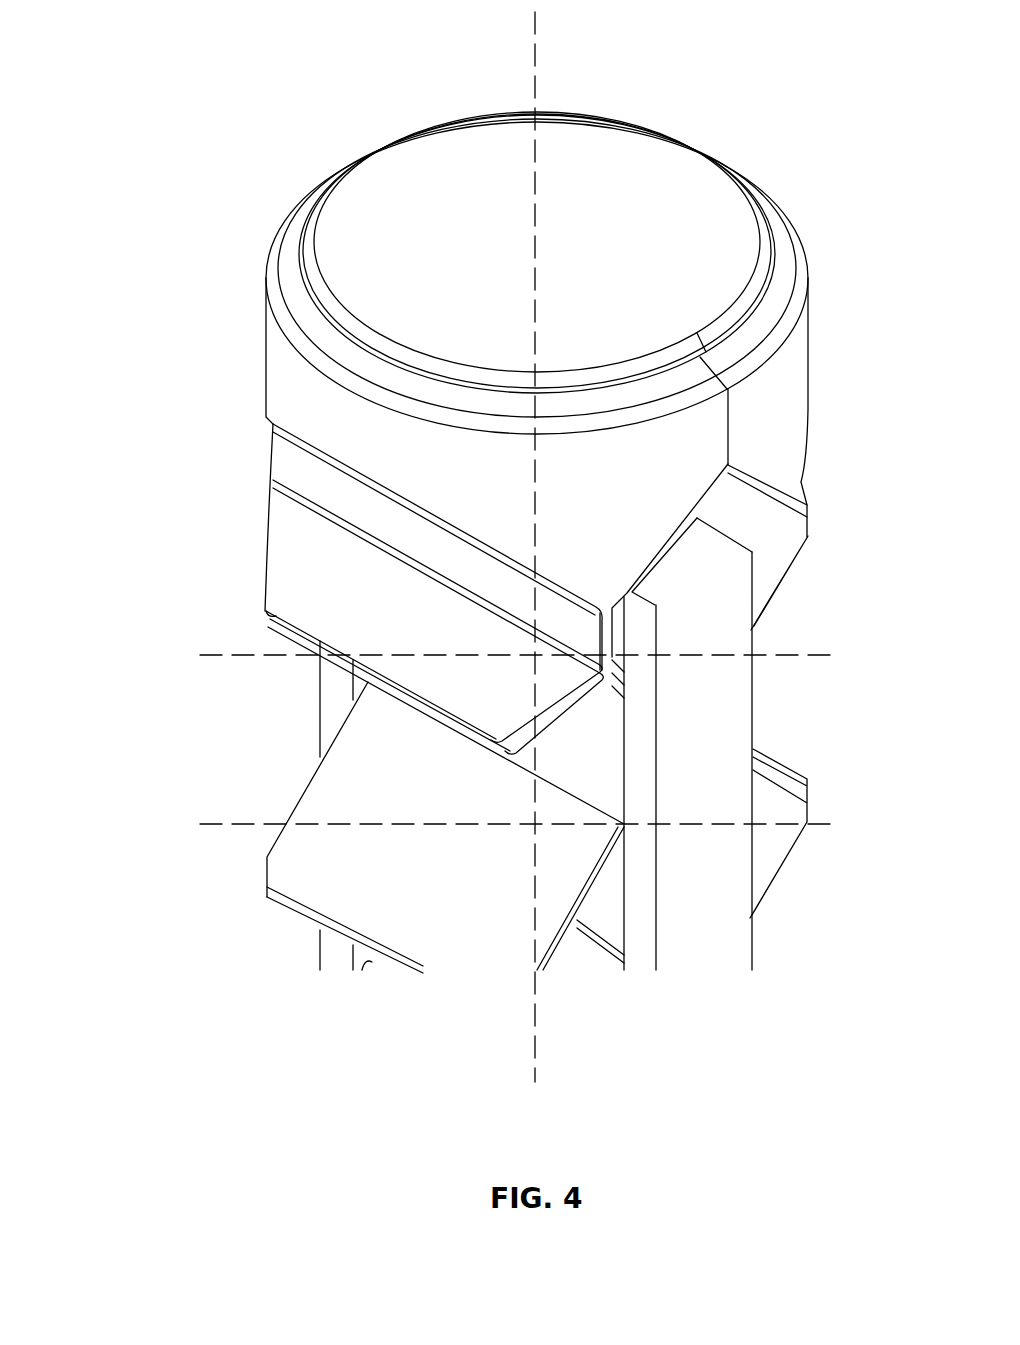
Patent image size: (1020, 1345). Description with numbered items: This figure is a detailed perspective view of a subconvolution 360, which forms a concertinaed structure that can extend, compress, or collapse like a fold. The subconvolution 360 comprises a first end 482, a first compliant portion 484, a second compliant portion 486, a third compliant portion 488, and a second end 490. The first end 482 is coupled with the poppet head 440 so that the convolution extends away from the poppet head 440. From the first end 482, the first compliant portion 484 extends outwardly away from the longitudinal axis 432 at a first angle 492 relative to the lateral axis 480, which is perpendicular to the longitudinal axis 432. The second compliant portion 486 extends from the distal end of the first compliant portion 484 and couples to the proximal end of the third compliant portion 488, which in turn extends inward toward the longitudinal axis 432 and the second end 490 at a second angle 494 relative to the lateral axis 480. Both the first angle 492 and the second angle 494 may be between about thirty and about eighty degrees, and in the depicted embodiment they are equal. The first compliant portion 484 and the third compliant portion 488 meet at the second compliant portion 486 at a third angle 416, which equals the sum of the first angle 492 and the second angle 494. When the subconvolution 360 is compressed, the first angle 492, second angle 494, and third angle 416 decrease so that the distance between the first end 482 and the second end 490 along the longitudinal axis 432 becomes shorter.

The subconvolution 360 is at (159, 405).
The third angle 416 is at (541, 760).
The longitudinal axis 432 is at (535, 57).
The poppet head 440 is at (412, 173).
The lateral axis 480 is at (827, 653).
The first end 482 is at (275, 484).
The first compliant portion 484 is at (288, 553).
The second compliant portion 486 is at (268, 613).
The third compliant portion 488 is at (556, 812).
The second end 490 is at (368, 682).
The first angle 492 is at (560, 698).
The second angle 494 is at (550, 823).